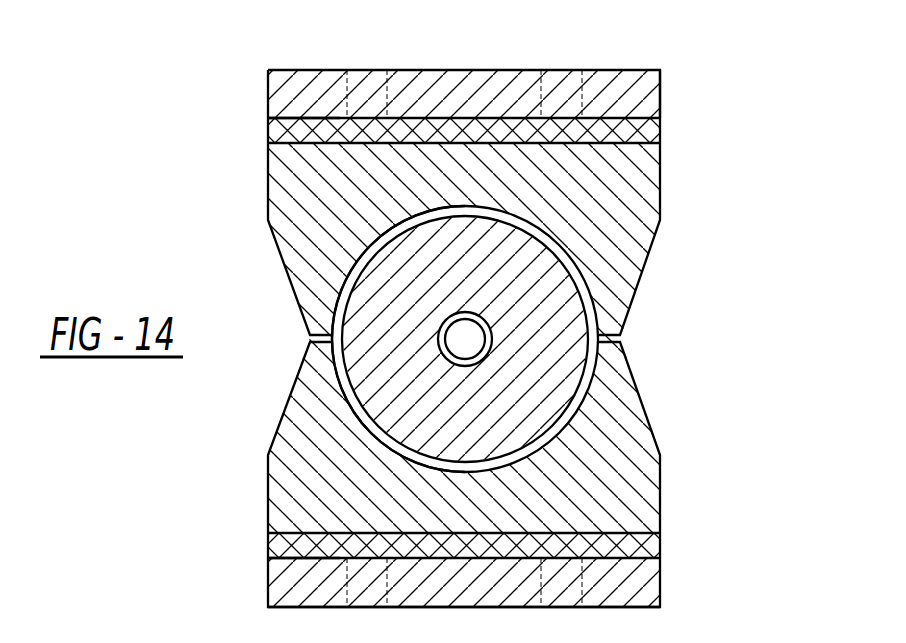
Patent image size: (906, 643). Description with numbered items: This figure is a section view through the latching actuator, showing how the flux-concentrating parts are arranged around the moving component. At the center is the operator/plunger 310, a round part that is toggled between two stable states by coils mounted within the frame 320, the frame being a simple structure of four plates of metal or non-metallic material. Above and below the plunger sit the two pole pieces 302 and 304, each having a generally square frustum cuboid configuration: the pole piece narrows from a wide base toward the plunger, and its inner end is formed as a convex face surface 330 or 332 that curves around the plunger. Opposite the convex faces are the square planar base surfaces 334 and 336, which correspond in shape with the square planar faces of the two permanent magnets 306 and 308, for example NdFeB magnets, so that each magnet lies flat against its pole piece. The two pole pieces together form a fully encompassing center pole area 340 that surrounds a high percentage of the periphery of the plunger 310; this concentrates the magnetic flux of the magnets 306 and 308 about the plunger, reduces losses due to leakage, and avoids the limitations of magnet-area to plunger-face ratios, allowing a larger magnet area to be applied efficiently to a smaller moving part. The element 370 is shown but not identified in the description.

The pole piece 302 is at (620, 190).
The pole piece 304 is at (614, 447).
The permanent magnet 306 is at (640, 132).
The permanent magnet 308 is at (635, 546).
The operator/plunger 310 is at (550, 345).
The frame 320 is at (627, 582).
The convex face surface 330 is at (374, 238).
The convex face surface 332 is at (382, 437).
The square planar base surface 334 is at (313, 143).
The square planar base surface 336 is at (308, 560).
The center pole area 340 is at (565, 253).
The upper plate 370 is at (612, 92).